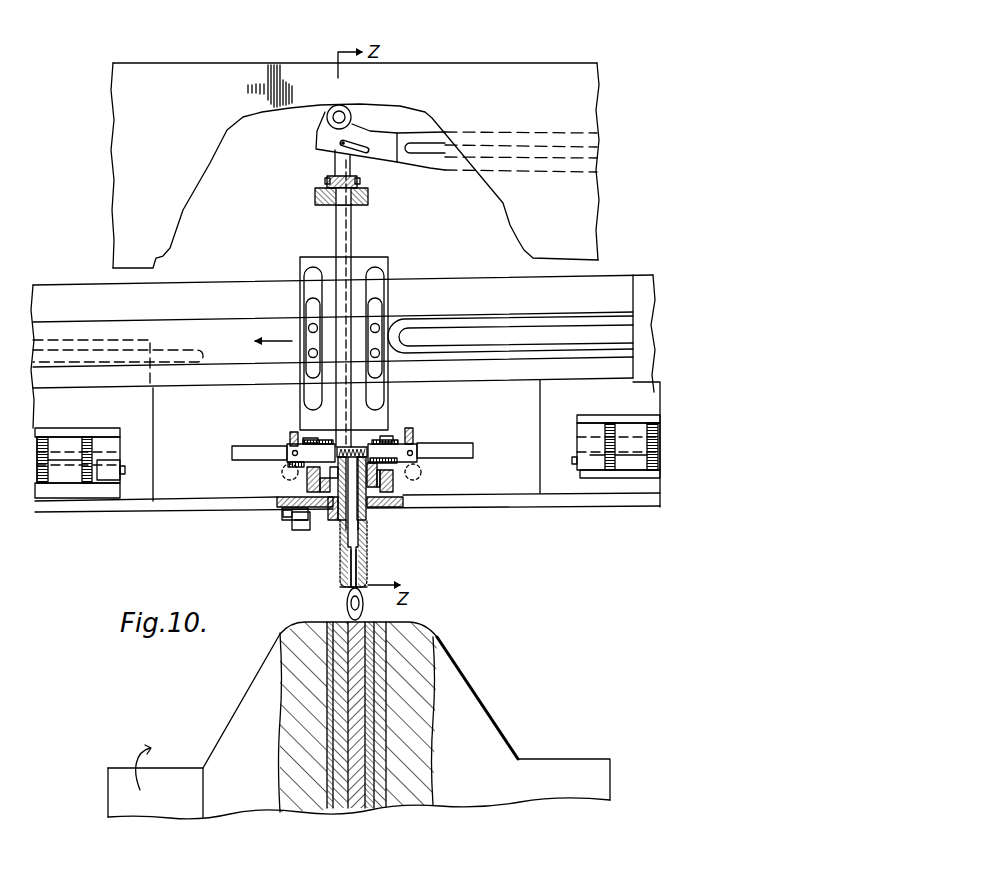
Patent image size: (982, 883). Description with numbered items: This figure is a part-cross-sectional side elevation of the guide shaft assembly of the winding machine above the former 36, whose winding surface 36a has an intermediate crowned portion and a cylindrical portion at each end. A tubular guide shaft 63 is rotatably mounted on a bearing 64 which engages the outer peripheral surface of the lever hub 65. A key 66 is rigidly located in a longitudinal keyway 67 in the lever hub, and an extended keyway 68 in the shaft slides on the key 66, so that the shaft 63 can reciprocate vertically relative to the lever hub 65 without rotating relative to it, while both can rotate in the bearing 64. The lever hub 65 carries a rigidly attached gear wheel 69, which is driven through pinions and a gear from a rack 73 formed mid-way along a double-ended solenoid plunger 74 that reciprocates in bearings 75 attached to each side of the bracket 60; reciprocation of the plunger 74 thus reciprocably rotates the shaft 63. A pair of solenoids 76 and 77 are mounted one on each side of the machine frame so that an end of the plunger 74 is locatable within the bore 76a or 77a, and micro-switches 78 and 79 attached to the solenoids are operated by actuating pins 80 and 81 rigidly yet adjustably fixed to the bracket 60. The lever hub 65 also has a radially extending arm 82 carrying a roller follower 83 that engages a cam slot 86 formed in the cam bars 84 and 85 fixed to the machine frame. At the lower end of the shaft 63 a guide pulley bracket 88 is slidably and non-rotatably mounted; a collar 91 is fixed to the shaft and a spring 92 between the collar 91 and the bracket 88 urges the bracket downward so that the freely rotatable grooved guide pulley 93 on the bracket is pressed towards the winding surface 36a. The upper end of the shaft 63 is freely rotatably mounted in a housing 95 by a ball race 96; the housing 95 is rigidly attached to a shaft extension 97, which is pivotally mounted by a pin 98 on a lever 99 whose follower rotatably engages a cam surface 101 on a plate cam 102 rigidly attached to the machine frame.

The former 36 is at (477, 714).
The winding surface 36a is at (480, 680).
The bracket 60 is at (372, 260).
The tubular guide shaft 63 is at (346, 246).
The bearing 64 is at (381, 499).
The lever hub 65 is at (360, 510).
The key 66 is at (362, 515).
The longitudinal keyway 67 is at (368, 525).
The extended keyway 68 is at (366, 565).
The gear wheel 69 is at (382, 476).
The rack 73 is at (357, 444).
The double-ended solenoid plunger 74 is at (240, 446).
The bearings 75 is at (310, 437).
The solenoid 76 is at (112, 440).
The bore 76a is at (63, 470).
The solenoid 77 is at (582, 427).
The bore 77a is at (632, 456).
The micro-switch 78 is at (108, 474).
The micro-switch 79 is at (598, 462).
The actuating pin 80 is at (293, 460).
The actuating pin 81 is at (404, 460).
The radially extending arm 82 is at (303, 531).
The roller follower 83 is at (301, 522).
The cam bar 84 is at (283, 498).
The cam bar 85 is at (178, 513).
The cam slot 86 is at (284, 513).
The guide pulley bracket 88 is at (341, 583).
The collar 91 is at (338, 528).
The spring 92 is at (340, 545).
The grooved guide pulley 93 is at (347, 611).
The housing 95 is at (358, 186).
The ball race 96 is at (351, 200).
The shaft extension 97 is at (333, 168).
The pin 98 is at (327, 118).
The lever 99 is at (438, 136).
The cam surface 101 is at (403, 108).
The plate cam 102 is at (506, 204).